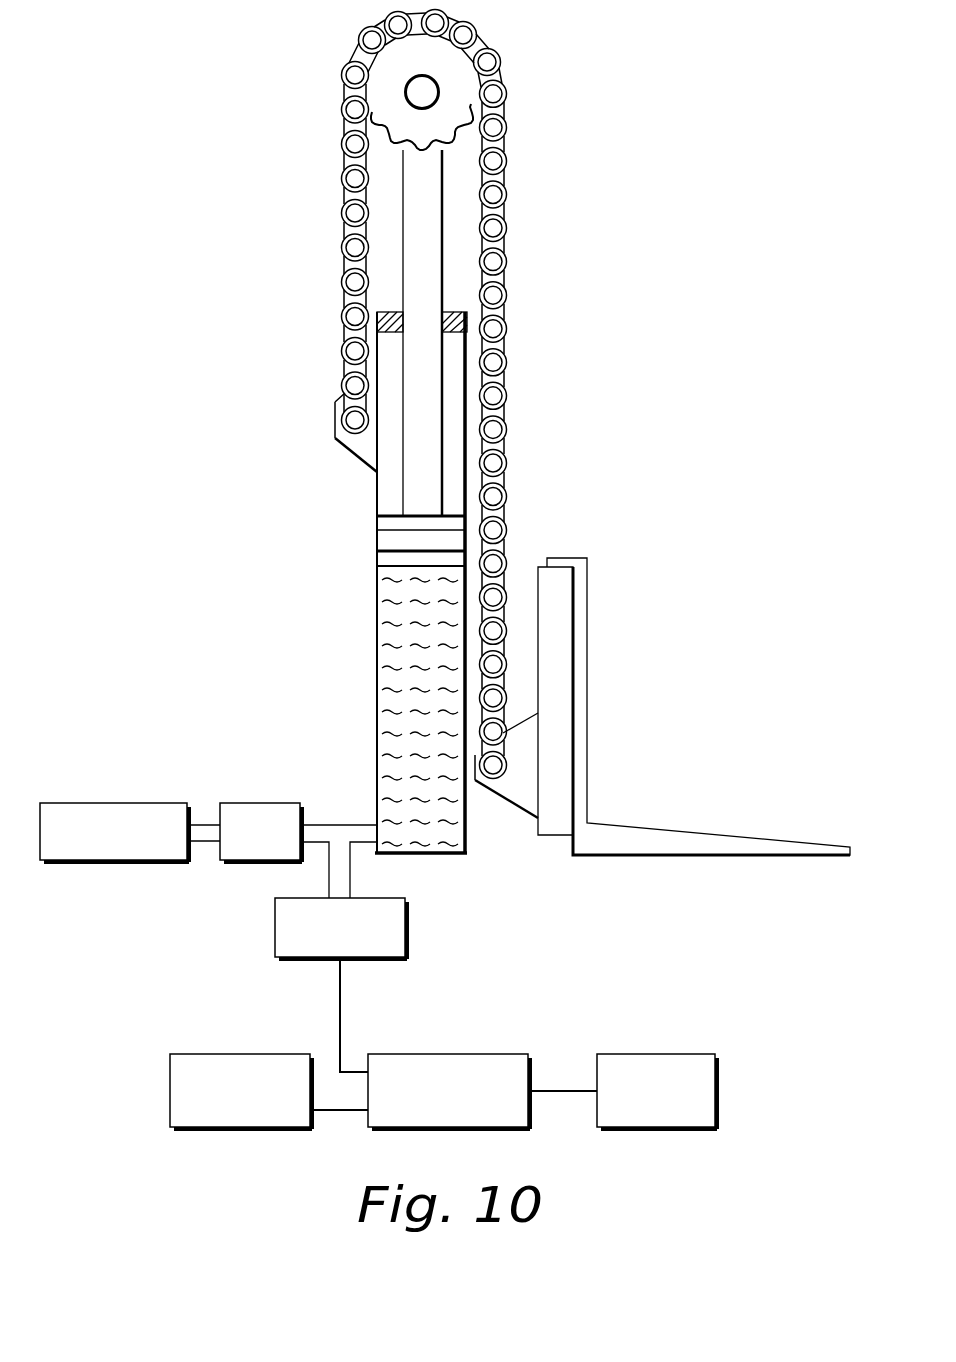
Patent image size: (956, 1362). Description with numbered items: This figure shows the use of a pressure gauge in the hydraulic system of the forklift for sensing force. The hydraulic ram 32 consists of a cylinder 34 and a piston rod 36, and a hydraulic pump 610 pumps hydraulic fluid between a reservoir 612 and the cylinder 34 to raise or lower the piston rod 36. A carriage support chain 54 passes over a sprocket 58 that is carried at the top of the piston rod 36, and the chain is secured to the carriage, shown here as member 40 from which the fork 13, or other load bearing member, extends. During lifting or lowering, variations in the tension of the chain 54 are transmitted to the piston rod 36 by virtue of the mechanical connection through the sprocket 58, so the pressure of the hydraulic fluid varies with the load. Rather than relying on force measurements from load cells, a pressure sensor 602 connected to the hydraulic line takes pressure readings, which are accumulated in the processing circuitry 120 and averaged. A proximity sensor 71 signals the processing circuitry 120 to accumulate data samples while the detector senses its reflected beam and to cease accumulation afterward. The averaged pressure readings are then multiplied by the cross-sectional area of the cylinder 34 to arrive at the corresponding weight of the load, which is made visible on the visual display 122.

The fork 13 is at (710, 833).
The hydraulic ram 32 is at (363, 501).
The cylinder 34 is at (383, 482).
The piston rod 36 is at (423, 210).
The member 40 is at (560, 680).
The carriage support chain 54 is at (500, 162).
The sprocket 58 is at (462, 103).
The proximity sensor 71 is at (240, 1054).
The processing circuitry 120 is at (447, 1054).
The visual display 122 is at (653, 1054).
The pressure sensor 602 is at (410, 930).
The hydraulic pump 610 is at (258, 803).
The reservoir 612 is at (113, 803).